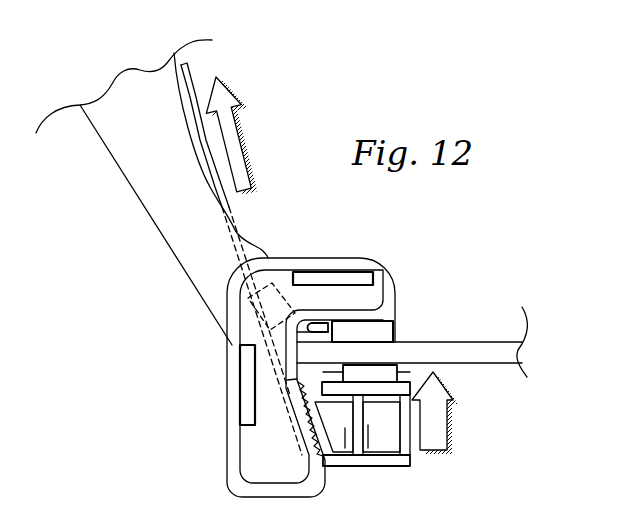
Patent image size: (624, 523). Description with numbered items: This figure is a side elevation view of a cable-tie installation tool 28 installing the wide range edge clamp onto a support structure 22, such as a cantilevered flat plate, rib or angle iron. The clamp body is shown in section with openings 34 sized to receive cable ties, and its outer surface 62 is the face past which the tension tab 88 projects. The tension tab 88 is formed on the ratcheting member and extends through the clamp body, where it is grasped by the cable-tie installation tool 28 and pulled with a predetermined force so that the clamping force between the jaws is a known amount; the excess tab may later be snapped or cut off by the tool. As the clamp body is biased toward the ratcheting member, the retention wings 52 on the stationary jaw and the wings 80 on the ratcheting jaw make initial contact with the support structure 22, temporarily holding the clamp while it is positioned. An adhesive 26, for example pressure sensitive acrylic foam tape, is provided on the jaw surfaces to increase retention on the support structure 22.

The support structure 22 is at (495, 342).
The adhesive 26 is at (337, 372).
The cable-tie installation tool 28 is at (150, 220).
The openings 34 is at (330, 280).
The retention wings 52 is at (387, 332).
The outer surface 62 is at (307, 257).
The wings 80 is at (388, 378).
The tension tab 88 is at (203, 137).